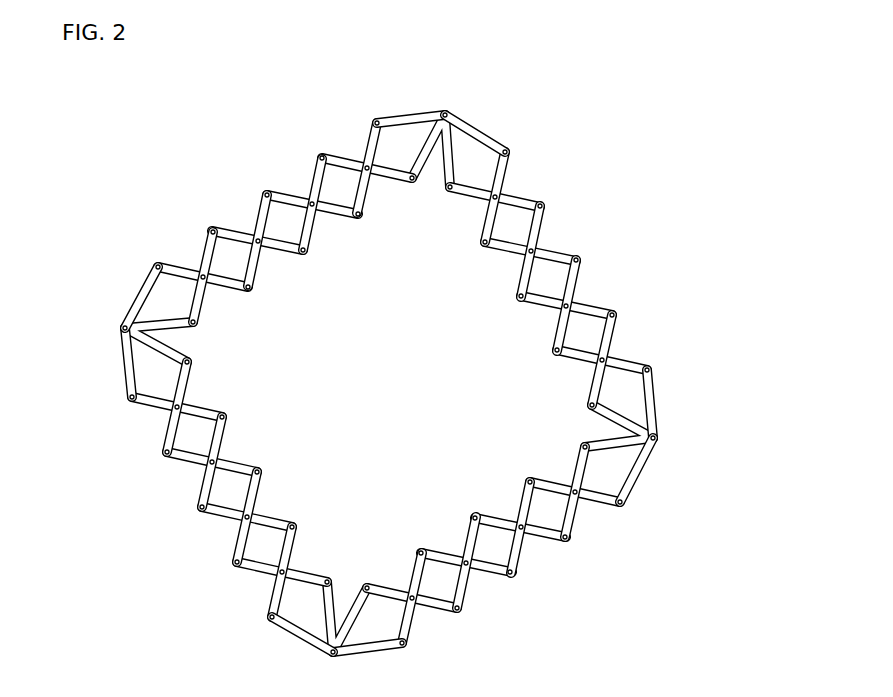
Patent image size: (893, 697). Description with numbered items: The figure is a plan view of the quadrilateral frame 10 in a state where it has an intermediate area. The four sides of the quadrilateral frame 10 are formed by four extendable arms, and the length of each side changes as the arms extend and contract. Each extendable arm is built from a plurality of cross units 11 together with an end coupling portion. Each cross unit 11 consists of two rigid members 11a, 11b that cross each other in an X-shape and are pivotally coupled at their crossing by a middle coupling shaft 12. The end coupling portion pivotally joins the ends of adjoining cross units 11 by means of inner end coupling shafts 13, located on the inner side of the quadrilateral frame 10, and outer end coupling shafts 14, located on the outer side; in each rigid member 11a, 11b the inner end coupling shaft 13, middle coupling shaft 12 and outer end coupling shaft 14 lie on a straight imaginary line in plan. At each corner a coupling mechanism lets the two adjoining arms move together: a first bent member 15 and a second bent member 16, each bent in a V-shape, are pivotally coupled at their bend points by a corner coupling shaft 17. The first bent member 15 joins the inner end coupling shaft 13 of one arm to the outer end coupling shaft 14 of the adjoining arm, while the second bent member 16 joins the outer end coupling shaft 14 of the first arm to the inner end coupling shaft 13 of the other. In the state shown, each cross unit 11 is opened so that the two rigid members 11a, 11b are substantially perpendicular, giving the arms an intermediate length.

The quadrilateral frame 10 is at (624, 124).
The cross unit 11 is at (415, 383).
The rigid member 11a is at (523, 202).
The rigid member 11b is at (506, 175).
The middle coupling shaft 12 is at (365, 167).
The inner end coupling shaft 13 is at (412, 186).
The outer end coupling shaft 14 is at (375, 120).
The first bent member 15 is at (481, 131).
The second bent member 16 is at (408, 117).
The corner coupling shaft 17 is at (445, 112).